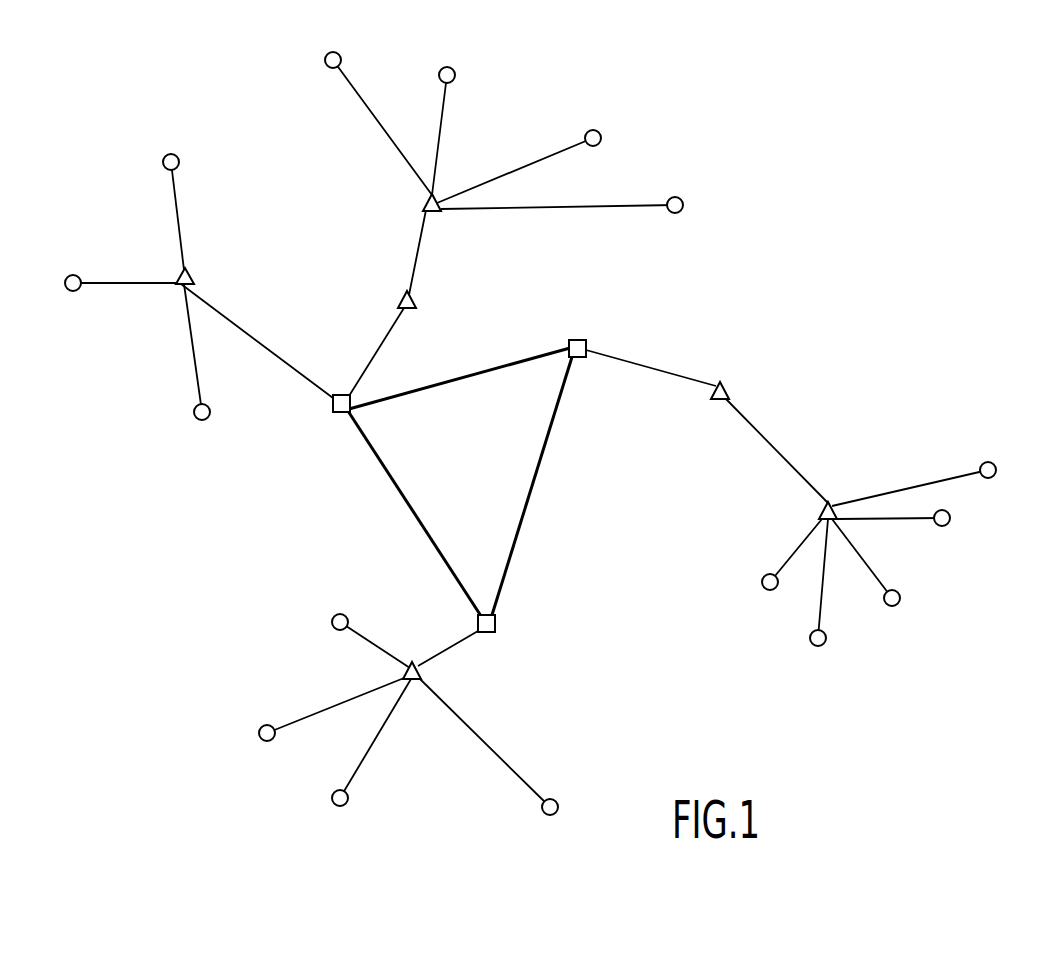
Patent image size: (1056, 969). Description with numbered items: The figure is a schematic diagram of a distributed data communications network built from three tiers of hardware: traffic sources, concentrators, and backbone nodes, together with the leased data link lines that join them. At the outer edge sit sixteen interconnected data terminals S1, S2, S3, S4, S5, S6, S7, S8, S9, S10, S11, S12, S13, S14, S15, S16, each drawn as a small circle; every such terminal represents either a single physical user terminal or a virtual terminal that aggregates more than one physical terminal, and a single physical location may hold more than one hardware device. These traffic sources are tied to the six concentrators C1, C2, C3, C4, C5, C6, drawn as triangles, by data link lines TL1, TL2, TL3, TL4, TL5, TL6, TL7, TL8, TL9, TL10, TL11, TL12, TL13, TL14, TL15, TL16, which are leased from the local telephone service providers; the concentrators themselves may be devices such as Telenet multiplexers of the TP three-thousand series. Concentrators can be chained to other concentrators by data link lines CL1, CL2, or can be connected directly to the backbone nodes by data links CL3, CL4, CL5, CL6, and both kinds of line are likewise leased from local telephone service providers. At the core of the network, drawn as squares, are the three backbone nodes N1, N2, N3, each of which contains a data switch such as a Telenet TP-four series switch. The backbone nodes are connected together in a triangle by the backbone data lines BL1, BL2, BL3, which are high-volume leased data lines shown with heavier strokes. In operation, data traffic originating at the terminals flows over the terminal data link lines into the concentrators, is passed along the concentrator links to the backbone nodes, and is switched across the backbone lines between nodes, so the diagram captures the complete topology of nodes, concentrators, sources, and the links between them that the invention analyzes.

The backbone node N1 is at (327, 419).
The backbone node N2 is at (589, 328).
The backbone node N3 is at (502, 635).
The concentrator C1 is at (736, 379).
The concentrator C2 is at (811, 510).
The concentrator C3 is at (431, 676).
The concentrator C4 is at (201, 278).
The concentrator C5 is at (394, 288).
The concentrator C6 is at (410, 205).
The data terminal S1 is at (1000, 453).
The data terminal S2 is at (956, 528).
The data terminal S3 is at (907, 611).
The data terminal S4 is at (829, 654).
The data terminal S5 is at (764, 599).
The data terminal S6 is at (561, 824).
The data terminal S7 is at (343, 818).
The data terminal S8 is at (256, 751).
The data terminal S9 is at (334, 602).
The data terminal S10 is at (210, 430).
The data terminal S11 is at (59, 265).
The data terminal S12 is at (178, 143).
The data terminal S13 is at (312, 48).
The data terminal S14 is at (438, 56).
The data terminal S15 is at (614, 126).
The data terminal S16 is at (699, 196).
The data link line TL1 is at (910, 481).
The data link line TL2 is at (889, 535).
The data link line TL3 is at (871, 558).
The data link line TL4 is at (844, 578).
The data link line TL5 is at (778, 550).
The data link line TL6 is at (485, 743).
The data link line TL7 is at (382, 738).
The data link line TL8 is at (335, 715).
The data link line TL9 is at (374, 649).
The data link line TL10 is at (168, 348).
The data link line TL11 is at (125, 261).
The data link line TL12 is at (206, 216).
The data link line TL13 is at (373, 127).
The data link line TL14 is at (413, 135).
The data link line TL15 is at (515, 170).
The data link line TL16 is at (558, 226).
The data link line CL1 is at (777, 451).
The data link line CL2 is at (438, 252).
The data link CL3 is at (651, 382).
The data link CL4 is at (440, 637).
The data link CL5 is at (259, 341).
The data link CL6 is at (384, 352).
The backbone data line BL1 is at (414, 513).
The backbone data line BL2 is at (459, 380).
The backbone data line BL3 is at (537, 486).